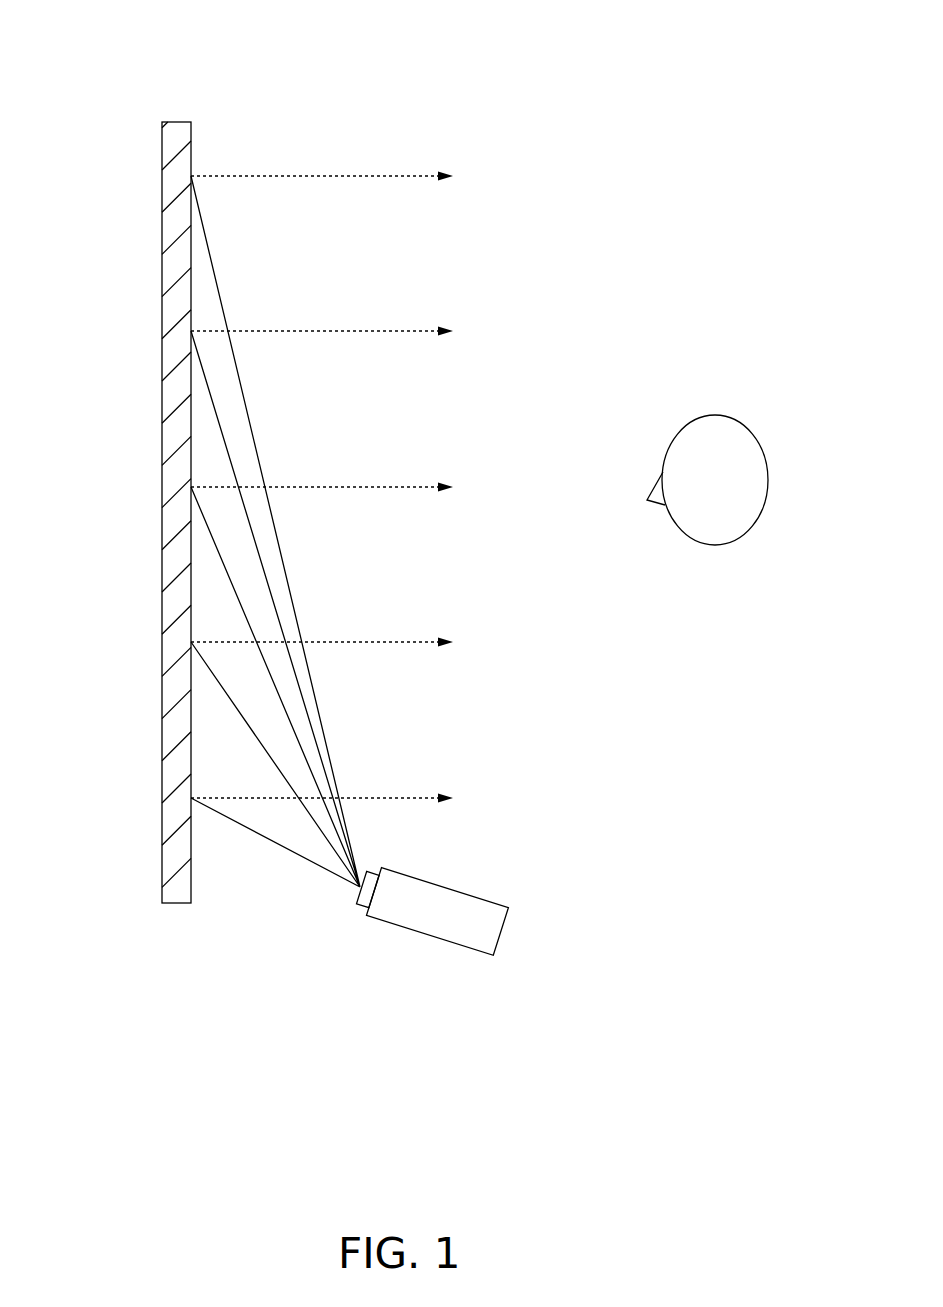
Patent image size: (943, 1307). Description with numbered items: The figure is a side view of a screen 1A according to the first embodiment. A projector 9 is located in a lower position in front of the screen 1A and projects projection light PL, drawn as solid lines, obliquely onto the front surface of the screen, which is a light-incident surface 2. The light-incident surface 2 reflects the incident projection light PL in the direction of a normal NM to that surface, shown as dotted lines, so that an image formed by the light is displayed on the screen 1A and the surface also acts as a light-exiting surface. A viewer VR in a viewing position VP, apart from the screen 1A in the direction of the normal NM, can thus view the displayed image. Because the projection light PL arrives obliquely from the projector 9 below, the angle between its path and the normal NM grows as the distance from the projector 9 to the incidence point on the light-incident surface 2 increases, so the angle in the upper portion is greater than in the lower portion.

The screen 1A is at (131, 93).
The light-incident surface 2 is at (192, 135).
The projector 9 is at (458, 902).
The normal NM is at (368, 176).
The projection light PL is at (212, 260).
The viewing position VP is at (735, 391).
The viewer VR is at (766, 497).